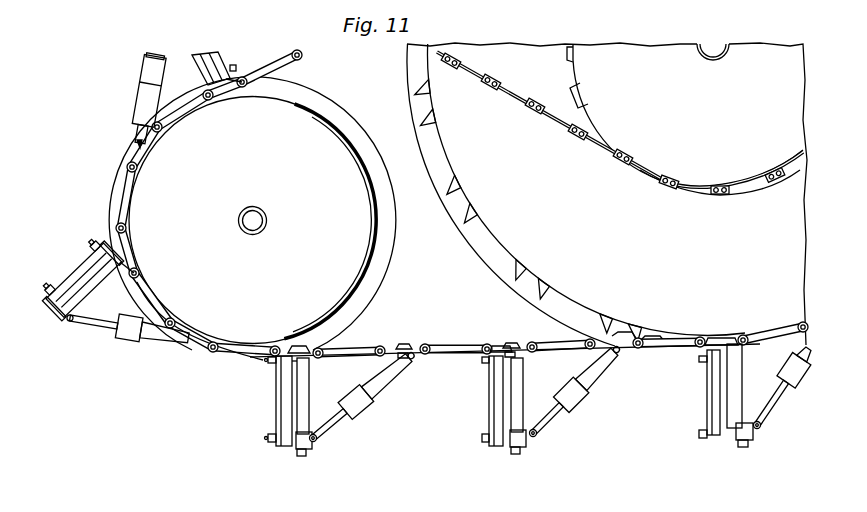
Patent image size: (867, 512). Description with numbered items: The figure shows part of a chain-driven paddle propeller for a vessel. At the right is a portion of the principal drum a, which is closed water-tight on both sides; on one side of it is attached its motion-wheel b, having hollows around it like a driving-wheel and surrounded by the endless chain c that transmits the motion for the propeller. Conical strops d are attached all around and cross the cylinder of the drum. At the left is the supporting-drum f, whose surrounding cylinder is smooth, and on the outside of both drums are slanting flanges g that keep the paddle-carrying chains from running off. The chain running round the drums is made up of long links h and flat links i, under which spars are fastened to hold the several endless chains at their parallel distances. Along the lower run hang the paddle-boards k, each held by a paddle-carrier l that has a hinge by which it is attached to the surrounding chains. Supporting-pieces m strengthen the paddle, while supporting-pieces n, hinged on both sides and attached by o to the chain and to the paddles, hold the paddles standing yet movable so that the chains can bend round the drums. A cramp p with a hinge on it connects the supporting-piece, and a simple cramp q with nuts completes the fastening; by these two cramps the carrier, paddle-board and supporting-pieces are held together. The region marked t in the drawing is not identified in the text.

The principal drum a is at (607, 194).
The motion-wheel b is at (721, 169).
The endless chain c is at (552, 195).
The conical strops d is at (530, 210).
The supporting-drum f is at (252, 220).
The slanting flanges g is at (531, 195).
The long links h is at (462, 205).
The flat links i is at (458, 341).
The paddle-board k is at (293, 449).
The paddle-carrier l is at (302, 396).
The supporting-piece m is at (276, 401).
The hinged supporting-piece n is at (562, 393).
The hinge attachment o is at (534, 442).
The hinged cramp p is at (481, 437).
The simple cramp q is at (408, 227).
The cutout t is at (685, 115).